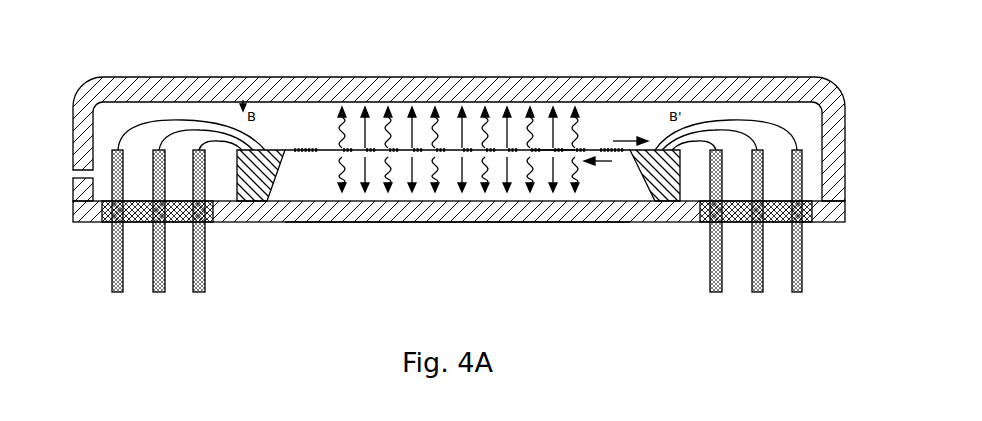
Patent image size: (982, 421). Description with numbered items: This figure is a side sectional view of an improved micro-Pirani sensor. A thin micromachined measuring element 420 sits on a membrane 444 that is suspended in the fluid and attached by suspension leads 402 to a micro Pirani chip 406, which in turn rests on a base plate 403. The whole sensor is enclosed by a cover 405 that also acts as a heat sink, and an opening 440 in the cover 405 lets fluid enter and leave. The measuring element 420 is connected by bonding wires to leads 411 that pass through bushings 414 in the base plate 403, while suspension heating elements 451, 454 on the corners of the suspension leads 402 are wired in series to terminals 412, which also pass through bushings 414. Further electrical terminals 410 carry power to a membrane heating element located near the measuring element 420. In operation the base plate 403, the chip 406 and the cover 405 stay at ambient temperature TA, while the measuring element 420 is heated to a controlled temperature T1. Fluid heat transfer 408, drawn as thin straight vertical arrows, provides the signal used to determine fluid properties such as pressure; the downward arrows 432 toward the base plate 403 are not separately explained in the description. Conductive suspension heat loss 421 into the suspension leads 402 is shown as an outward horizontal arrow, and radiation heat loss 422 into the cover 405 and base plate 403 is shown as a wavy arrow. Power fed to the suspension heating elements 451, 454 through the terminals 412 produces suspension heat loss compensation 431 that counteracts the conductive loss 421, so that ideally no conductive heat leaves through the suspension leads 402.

The suspension leads 402 is at (336, 149).
The base plate 403 is at (437, 222).
The cover 405 is at (387, 149).
The micro Pirani chip 406 is at (637, 203).
The fluid heat transfer 408 is at (550, 142).
The electrical terminals 410 is at (116, 293).
The leads 411 is at (157, 293).
The terminals 412 is at (201, 293).
The bushings 414 is at (207, 223).
The measuring element 420 is at (374, 106).
The suspension heat loss 421 is at (627, 139).
The radiation heat loss 422 is at (436, 124).
The suspension heat loss compensation 431 is at (607, 164).
The downward heat flow arrows 432 is at (471, 124).
The opening 440 is at (72, 174).
The membrane 444 is at (308, 222).
The suspension heating element 451 is at (300, 148).
The suspension heating element 454 is at (614, 148).
The ambient temperature TA is at (723, 88).
The controlled temperature T1 is at (510, 152).